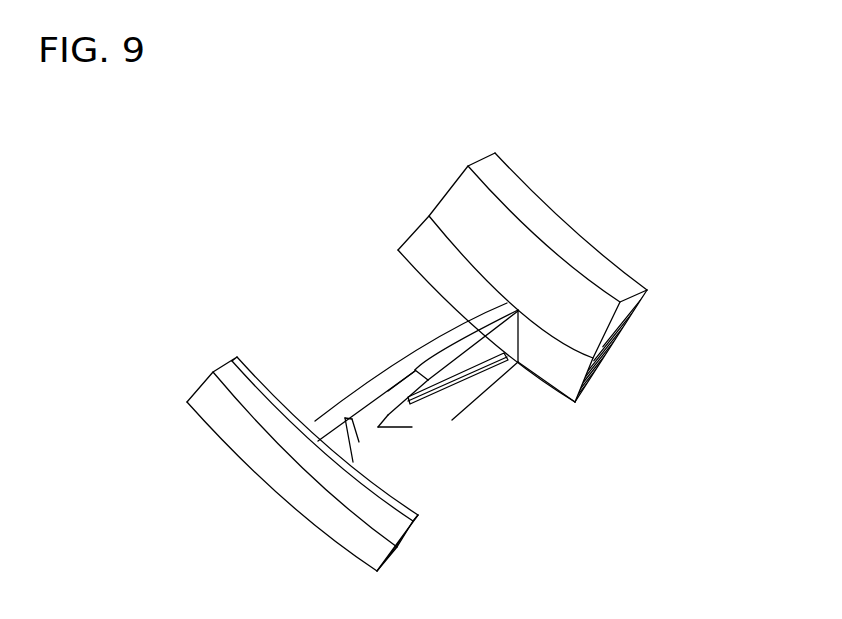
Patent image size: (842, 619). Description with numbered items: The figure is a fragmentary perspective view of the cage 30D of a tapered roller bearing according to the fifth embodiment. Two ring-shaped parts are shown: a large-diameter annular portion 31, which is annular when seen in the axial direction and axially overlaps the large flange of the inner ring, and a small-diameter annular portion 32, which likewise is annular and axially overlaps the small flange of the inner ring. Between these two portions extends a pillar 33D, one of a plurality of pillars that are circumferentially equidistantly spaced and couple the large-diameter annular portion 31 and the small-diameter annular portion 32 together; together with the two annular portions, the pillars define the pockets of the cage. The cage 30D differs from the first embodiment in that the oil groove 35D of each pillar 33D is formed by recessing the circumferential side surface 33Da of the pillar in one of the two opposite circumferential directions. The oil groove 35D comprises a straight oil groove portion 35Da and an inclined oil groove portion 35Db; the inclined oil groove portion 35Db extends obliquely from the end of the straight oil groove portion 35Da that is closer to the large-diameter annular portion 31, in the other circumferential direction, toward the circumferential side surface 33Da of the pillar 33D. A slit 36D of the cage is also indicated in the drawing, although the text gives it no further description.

The large-diameter annular portion 31 is at (284, 482).
The small-diameter annular portion 32 is at (525, 227).
The cage 30D is at (397, 357).
The pillar 33D is at (437, 407).
The circumferential side surface 33Da is at (412, 427).
The oil groove 35D is at (332, 365).
The straight oil groove portion 35Da is at (388, 397).
The inclined oil groove portion 35Db is at (340, 422).
The slit 36D is at (480, 372).